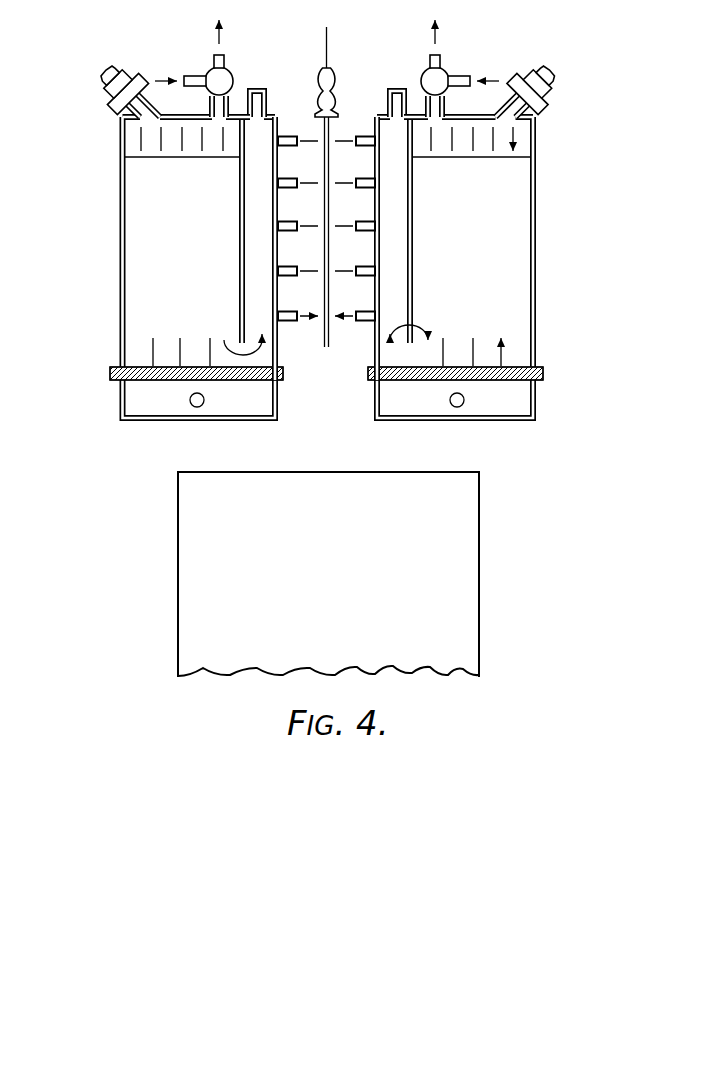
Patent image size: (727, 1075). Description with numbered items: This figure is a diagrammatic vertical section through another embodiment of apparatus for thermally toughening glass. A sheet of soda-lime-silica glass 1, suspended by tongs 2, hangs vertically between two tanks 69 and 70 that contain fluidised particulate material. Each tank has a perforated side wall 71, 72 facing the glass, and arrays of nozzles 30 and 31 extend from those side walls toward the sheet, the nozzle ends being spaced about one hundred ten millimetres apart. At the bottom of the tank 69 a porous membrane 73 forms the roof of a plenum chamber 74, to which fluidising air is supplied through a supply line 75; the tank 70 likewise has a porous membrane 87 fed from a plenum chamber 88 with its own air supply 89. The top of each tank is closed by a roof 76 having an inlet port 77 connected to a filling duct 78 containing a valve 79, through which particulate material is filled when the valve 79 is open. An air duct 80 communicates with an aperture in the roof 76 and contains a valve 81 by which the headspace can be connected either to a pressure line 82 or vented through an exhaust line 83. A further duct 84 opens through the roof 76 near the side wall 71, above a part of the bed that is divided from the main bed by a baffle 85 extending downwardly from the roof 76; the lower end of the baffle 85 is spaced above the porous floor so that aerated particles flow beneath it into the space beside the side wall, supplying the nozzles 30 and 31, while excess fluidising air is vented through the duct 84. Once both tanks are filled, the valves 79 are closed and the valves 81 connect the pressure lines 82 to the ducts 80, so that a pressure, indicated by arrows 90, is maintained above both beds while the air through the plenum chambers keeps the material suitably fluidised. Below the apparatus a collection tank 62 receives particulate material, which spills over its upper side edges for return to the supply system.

The sheet of soda-lime-silica glass 1 is at (314, 182).
The tongs 2 is at (331, 70).
The array of nozzles 30 is at (366, 236).
The array of nozzles 31 is at (286, 224).
The collection tank 62 is at (443, 568).
The tank 69 is at (508, 236).
The tank 70 is at (131, 182).
The side wall 71 is at (374, 350).
The side wall 72 is at (279, 350).
The porous membrane 73 is at (542, 379).
The plenum chamber 74 is at (503, 397).
The supply line 75 is at (457, 408).
The roof 76 is at (176, 111).
The inlet port 77 is at (154, 102).
The filling duct 78 is at (108, 81).
The valve 79 is at (136, 79).
The air duct 80 is at (232, 112).
The valve 81 is at (227, 82).
The pressure line 82 is at (196, 77).
The exhaust line 83 is at (227, 60).
The further duct 84 is at (264, 104).
The baffle 85 is at (241, 190).
The porous membrane 87 is at (119, 379).
The plenum chamber 88 is at (148, 410).
The air supply 89 is at (197, 407).
The arrows indicating pressure 90 is at (140, 136).